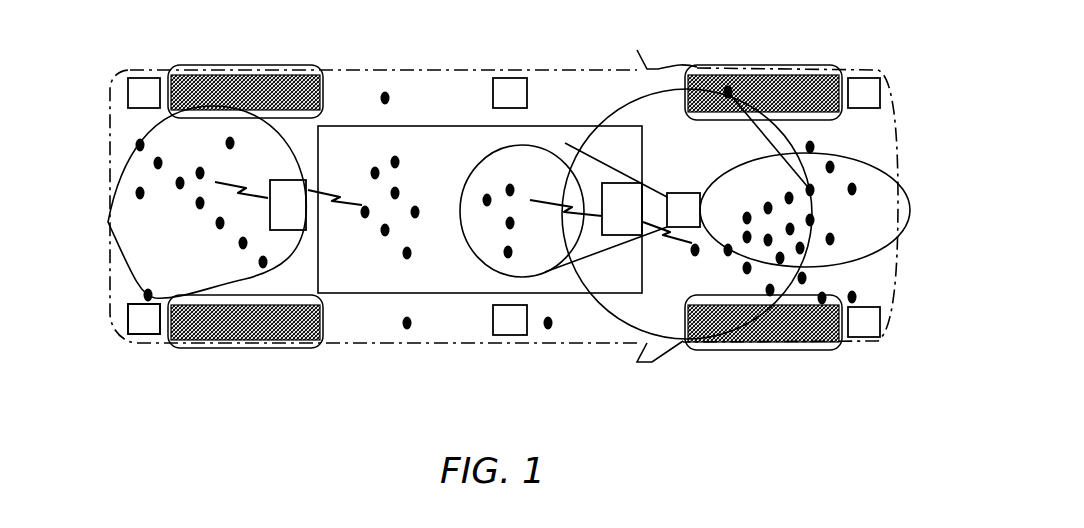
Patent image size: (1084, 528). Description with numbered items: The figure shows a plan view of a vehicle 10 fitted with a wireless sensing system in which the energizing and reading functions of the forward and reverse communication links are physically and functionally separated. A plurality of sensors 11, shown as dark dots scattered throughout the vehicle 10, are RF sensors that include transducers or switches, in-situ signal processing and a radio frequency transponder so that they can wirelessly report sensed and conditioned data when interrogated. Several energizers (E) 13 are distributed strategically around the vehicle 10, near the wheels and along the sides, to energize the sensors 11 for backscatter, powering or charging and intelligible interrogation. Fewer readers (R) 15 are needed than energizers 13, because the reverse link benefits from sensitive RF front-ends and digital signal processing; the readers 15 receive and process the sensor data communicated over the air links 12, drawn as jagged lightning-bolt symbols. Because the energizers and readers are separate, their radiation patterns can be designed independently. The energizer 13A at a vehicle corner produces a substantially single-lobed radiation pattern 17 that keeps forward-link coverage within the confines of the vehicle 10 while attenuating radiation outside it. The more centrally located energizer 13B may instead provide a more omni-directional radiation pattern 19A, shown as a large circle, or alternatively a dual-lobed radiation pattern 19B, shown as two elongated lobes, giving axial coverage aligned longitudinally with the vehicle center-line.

The vehicle 10 is at (567, 68).
The sensors 11 is at (496, 255).
The air links 12 is at (233, 182).
The energizers (E) 13 is at (135, 78).
The energizer located at a vehicle corner 13A is at (140, 332).
The centrally located energizer 13B is at (690, 195).
The readers (R) 15 is at (287, 180).
The single-lobed radiation pattern 17 is at (107, 215).
The omni-directional radiation pattern 19A is at (655, 88).
The dual-lobed radiation pattern 19B is at (497, 153).